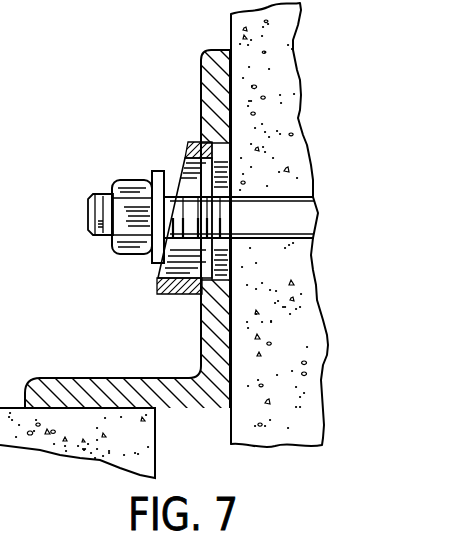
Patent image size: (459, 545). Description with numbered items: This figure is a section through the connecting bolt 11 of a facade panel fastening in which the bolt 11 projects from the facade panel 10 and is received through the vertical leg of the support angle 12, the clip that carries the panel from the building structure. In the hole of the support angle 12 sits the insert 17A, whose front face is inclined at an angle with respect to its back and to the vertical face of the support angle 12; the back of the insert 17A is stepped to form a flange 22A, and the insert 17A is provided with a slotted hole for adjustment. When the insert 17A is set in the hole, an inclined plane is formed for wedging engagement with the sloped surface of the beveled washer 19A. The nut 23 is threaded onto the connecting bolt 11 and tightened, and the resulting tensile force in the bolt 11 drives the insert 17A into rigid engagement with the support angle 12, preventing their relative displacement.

The facade panel 10 is at (288, 129).
The connecting bolt 11 is at (92, 214).
The support angle 12 is at (208, 65).
The insert 17A is at (187, 147).
The beveled washer 19A is at (165, 178).
The flange 22A is at (200, 140).
The nut 23 is at (133, 190).